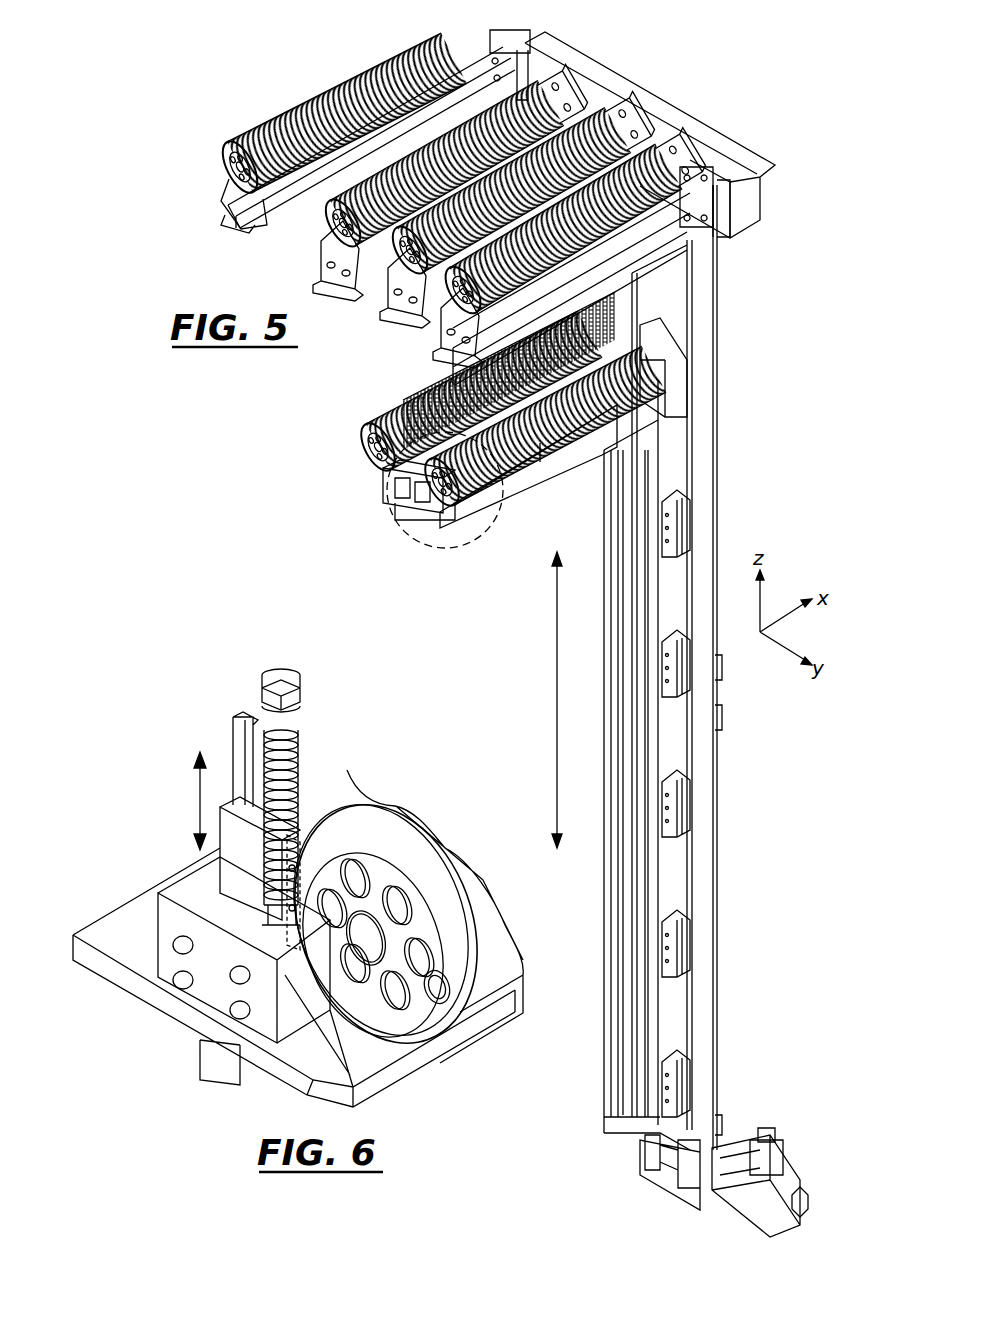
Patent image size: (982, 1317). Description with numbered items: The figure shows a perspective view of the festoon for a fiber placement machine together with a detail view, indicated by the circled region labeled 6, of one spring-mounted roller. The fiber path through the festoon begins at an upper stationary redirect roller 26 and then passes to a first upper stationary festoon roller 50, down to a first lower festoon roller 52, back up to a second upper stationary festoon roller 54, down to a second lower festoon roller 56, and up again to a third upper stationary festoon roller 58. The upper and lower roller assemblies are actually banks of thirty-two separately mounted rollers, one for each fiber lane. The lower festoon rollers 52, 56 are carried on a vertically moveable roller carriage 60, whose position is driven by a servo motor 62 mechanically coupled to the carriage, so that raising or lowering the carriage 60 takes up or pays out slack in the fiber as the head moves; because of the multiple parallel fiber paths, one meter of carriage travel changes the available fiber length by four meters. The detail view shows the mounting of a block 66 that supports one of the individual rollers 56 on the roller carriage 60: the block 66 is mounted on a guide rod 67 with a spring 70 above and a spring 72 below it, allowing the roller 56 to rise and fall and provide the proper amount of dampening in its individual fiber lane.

In FIG. 5, the upper stationary redirect roller 26 is at (288, 118).
In FIG. 5, the first upper stationary festoon roller 50 is at (548, 92).
In FIG. 5, the second upper stationary festoon roller 54 is at (613, 122).
In FIG. 5, the third upper stationary festoon roller 58 is at (676, 162).
In FIG. 5, the first lower festoon roller 52 is at (362, 448).
In FIG. 5, the second lower festoon roller 56 is at (490, 492).
In FIG. 6, the second lower festoon roller 56 is at (370, 875).
In FIG. 5, the vertically moveable roller carriage 60 is at (397, 470).
In FIG. 6, the vertically moveable roller carriage 60 is at (130, 990).
In FIG. 5, the detail view circle 6 is at (398, 508).
In FIG. 5, the servo motor 62 is at (732, 1193).
In FIG. 6, the block 66 is at (233, 860).
In FIG. 6, the guide rod 67 is at (284, 722).
In FIG. 6, the spring 70 is at (298, 742).
In FIG. 6, the spring 72 is at (268, 926).